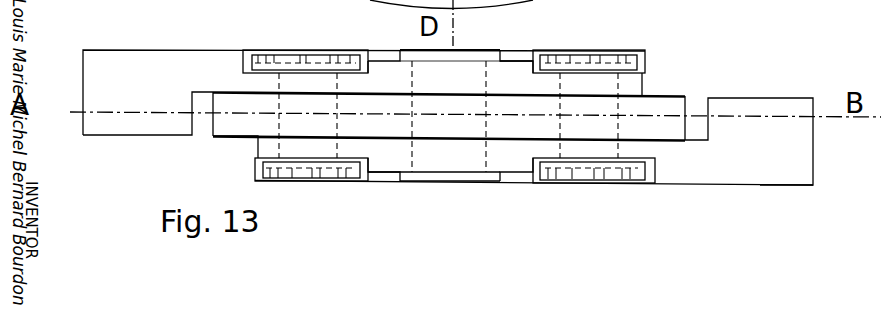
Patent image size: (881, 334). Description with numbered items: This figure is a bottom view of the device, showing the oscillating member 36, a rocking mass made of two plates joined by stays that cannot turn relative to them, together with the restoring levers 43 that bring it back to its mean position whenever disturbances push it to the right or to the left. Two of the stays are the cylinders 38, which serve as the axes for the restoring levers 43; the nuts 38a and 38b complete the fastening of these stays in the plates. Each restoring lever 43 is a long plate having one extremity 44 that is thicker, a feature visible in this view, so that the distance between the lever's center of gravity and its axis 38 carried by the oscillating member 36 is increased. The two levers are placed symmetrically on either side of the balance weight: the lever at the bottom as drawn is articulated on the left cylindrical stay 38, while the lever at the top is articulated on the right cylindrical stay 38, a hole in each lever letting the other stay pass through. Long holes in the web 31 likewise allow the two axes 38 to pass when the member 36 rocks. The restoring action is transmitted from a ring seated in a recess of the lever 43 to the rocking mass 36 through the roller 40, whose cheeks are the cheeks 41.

The web 31 is at (637, 113).
The oscillating member 36 is at (386, 58).
The cylinders 38 is at (302, 121).
The nut 38a is at (306, 181).
The nut 38b is at (302, 62).
The roller 40 is at (437, 121).
The cheeks 41 is at (400, 178).
The restoring levers 43 is at (295, 0).
The extremity 44 is at (778, 168).